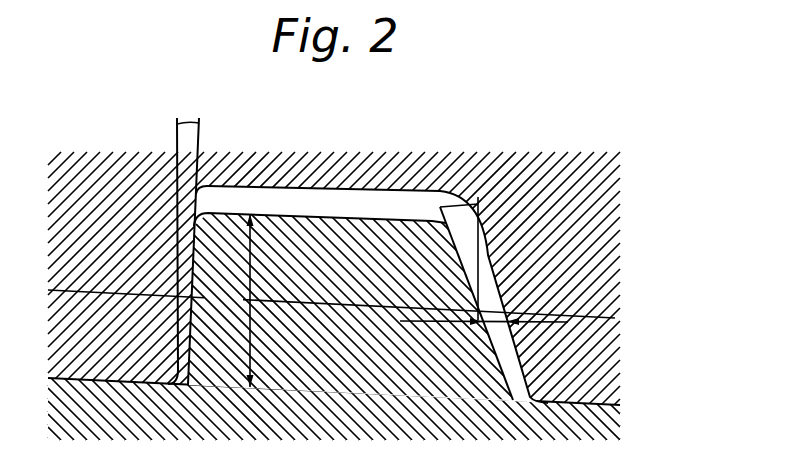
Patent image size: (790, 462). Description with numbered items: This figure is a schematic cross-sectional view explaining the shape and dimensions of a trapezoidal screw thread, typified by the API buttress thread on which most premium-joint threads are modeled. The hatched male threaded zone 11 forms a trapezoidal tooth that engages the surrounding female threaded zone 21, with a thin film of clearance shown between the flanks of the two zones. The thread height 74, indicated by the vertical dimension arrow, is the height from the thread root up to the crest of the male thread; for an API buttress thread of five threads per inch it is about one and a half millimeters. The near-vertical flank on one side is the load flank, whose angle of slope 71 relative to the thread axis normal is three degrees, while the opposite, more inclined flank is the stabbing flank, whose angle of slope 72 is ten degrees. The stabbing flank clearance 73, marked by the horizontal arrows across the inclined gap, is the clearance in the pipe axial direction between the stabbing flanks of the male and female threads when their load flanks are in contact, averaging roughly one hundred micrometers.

The male threaded zone 11 is at (334, 296).
The female threaded zone 21 is at (334, 296).
The angle of slope of the load flank 71 is at (186, 234).
The angle of slope of the stabbing flank 72 is at (459, 242).
The stabbing flank clearance 73 is at (484, 302).
The thread height 74 is at (230, 300).